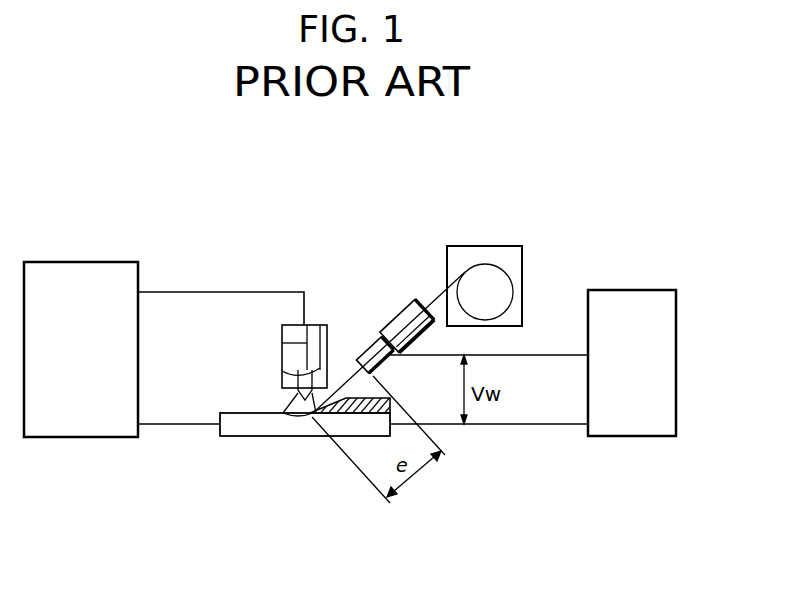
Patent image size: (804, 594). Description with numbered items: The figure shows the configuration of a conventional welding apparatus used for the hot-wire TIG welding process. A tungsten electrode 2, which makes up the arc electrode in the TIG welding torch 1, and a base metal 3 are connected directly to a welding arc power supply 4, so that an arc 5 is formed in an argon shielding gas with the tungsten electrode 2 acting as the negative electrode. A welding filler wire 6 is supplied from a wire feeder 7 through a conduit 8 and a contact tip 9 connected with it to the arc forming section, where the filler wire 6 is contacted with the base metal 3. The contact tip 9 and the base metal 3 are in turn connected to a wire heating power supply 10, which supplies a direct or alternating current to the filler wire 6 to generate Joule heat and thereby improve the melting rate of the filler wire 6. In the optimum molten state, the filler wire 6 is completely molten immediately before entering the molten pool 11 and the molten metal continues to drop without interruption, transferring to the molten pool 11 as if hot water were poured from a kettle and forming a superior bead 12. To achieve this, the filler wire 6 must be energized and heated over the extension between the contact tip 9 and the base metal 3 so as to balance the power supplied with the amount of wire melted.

The TIG welding torch 1 is at (282, 338).
The tungsten electrode 2 is at (308, 370).
The base metal 3 is at (234, 437).
The welding arc power supply 4 is at (101, 262).
The arc 5 is at (286, 408).
The welding filler wire 6 is at (349, 376).
The wire feeder 7 is at (501, 246).
The conduit 8 is at (400, 307).
The contact tip 9 is at (383, 360).
The wire heating power supply 10 is at (645, 290).
The molten pool 11 is at (294, 414).
The bead 12 is at (313, 416).